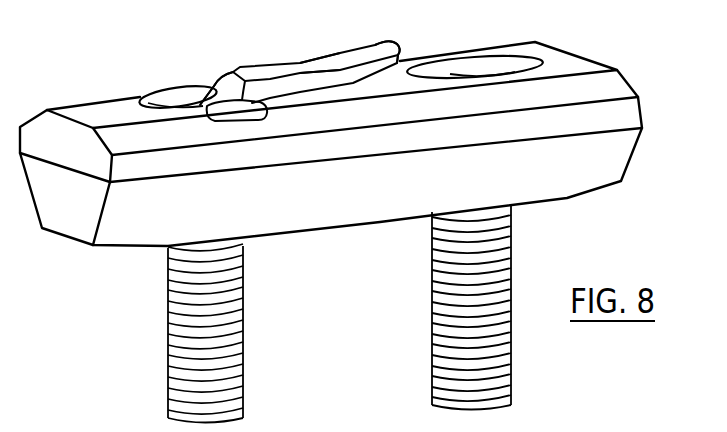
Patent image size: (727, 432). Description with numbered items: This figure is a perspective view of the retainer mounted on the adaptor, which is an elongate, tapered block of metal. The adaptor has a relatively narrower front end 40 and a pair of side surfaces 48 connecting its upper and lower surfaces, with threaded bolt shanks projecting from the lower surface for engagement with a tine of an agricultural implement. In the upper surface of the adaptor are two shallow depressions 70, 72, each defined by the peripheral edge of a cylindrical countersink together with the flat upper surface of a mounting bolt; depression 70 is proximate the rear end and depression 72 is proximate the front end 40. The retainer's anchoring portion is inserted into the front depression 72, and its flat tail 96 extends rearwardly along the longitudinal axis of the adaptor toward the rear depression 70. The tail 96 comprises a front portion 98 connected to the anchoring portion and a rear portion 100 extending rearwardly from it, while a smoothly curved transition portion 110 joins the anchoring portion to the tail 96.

The front end 40 is at (65, 215).
The side surface 48 is at (345, 210).
The depression 70 is at (461, 64).
The depression 72 is at (175, 100).
The tail 96 is at (286, 60).
The front portion 98 is at (290, 68).
The rear portion 100 is at (363, 53).
The transition portion 110 is at (228, 80).